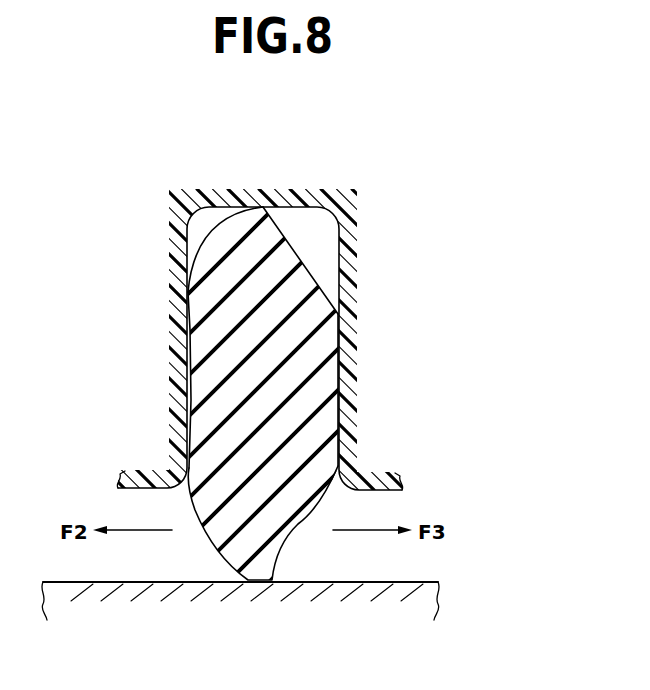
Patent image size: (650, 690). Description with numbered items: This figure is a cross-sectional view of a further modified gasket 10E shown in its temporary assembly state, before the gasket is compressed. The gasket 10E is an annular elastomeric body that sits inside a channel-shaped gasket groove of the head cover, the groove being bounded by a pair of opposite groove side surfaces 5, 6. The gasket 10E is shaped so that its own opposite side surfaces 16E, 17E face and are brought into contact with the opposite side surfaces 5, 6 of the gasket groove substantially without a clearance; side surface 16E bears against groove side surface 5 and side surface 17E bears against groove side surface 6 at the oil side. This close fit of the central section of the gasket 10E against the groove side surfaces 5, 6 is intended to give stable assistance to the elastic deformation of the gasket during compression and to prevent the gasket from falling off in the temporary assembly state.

The groove side surface 5 is at (186, 290).
The groove side surface 6 is at (343, 249).
The gasket 10E is at (302, 240).
The side surface of the gasket 16E is at (190, 386).
The side surface of the gasket 17E is at (344, 347).